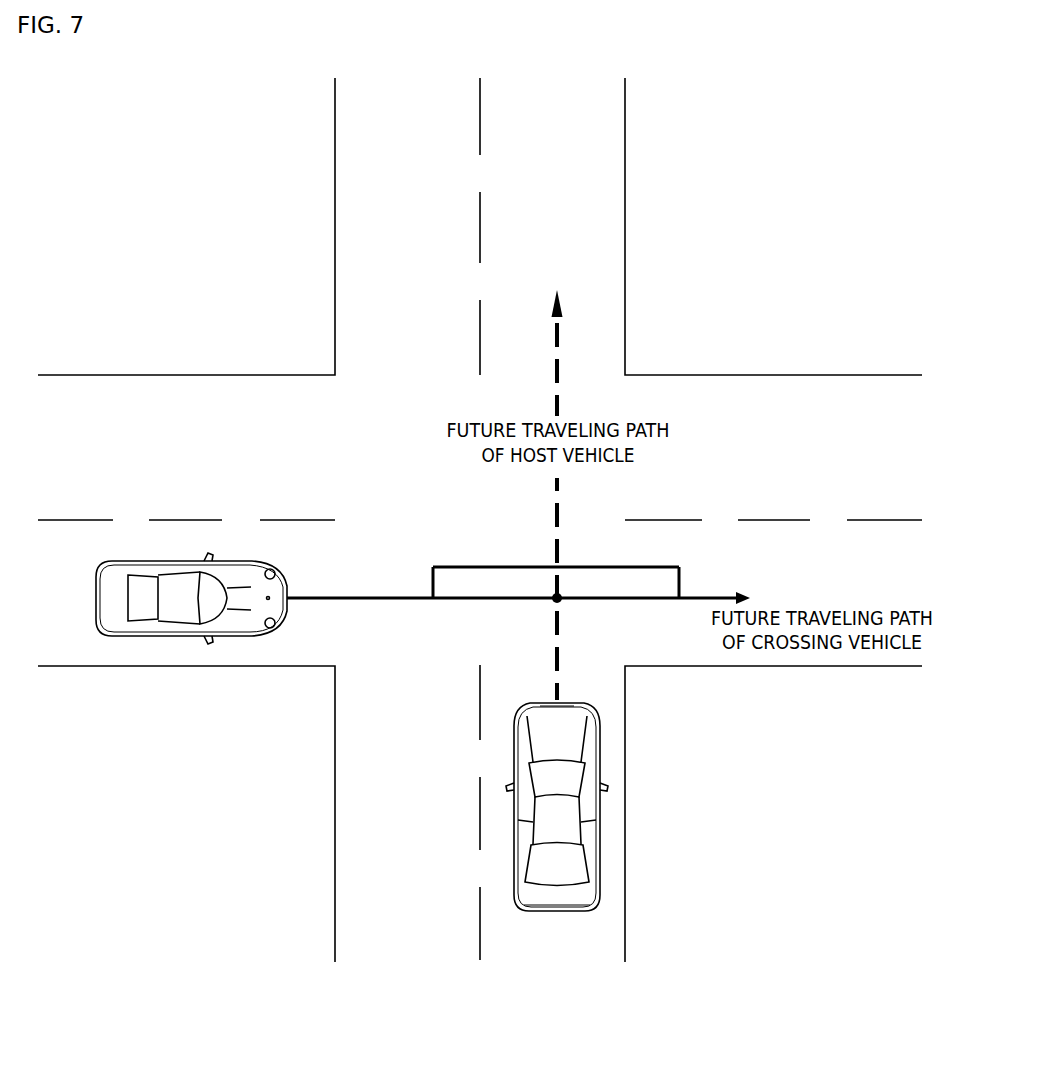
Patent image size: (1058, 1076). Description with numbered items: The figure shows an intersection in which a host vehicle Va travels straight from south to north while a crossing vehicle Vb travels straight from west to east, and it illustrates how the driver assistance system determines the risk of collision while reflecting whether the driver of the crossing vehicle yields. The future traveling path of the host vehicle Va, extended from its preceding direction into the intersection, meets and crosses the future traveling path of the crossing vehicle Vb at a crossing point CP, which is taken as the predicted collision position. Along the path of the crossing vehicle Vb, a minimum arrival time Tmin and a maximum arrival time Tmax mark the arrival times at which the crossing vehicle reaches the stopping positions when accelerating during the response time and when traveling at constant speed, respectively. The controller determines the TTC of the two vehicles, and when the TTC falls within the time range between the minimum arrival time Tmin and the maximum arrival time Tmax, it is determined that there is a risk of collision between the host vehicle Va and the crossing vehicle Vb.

The host vehicle Va is at (545, 700).
The crossing vehicle Vb is at (287, 615).
The crossing point CP is at (569, 611).
The element TTC is at (532, 604).
The minimum arrival time Tmin is at (433, 601).
The maximum arrival time Tmax is at (678, 601).